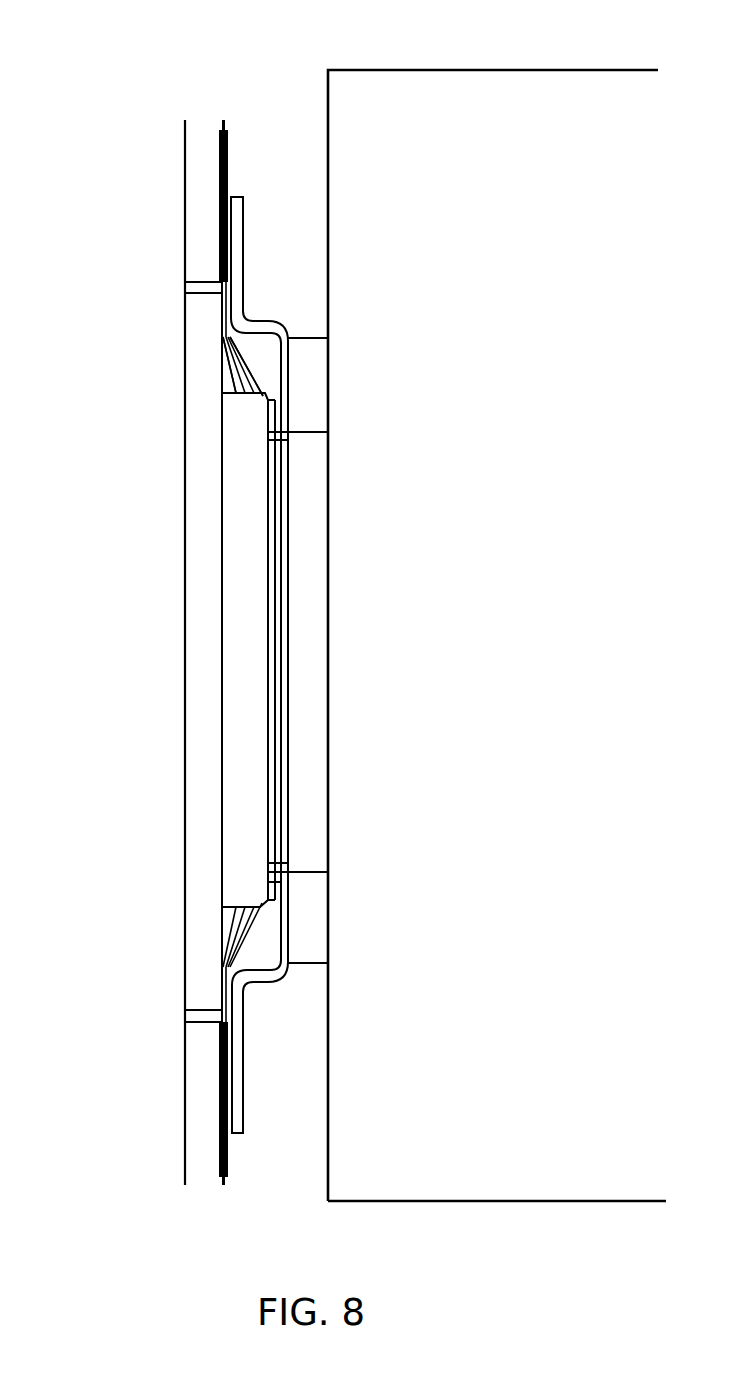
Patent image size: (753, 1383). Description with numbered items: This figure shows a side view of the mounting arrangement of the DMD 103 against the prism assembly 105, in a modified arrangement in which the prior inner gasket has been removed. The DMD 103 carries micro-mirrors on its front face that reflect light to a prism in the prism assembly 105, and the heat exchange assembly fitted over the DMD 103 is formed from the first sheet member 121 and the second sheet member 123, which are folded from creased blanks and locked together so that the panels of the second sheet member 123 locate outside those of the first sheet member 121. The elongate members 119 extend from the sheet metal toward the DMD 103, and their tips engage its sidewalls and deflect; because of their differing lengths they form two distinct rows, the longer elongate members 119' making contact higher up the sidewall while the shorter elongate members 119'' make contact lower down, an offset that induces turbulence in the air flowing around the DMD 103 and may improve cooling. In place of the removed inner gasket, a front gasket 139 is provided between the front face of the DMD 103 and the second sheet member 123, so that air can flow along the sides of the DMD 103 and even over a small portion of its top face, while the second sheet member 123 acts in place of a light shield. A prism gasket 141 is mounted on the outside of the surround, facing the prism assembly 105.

The prism assembly 105 is at (547, 143).
The DMD 103 is at (185, 352).
The first sheet member 121 is at (228, 165).
The second sheet member 123 is at (242, 246).
The elongate members 119 is at (172, 652).
The longer elongate members 119' is at (329, 339).
The shorter elongate members 119'' is at (161, 394).
The prism gasket 141 is at (310, 400).
The front gasket 139 is at (275, 434).